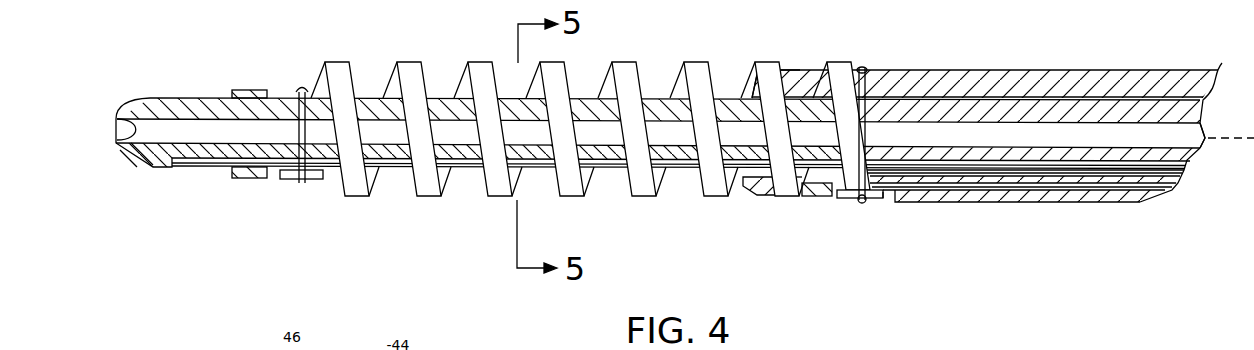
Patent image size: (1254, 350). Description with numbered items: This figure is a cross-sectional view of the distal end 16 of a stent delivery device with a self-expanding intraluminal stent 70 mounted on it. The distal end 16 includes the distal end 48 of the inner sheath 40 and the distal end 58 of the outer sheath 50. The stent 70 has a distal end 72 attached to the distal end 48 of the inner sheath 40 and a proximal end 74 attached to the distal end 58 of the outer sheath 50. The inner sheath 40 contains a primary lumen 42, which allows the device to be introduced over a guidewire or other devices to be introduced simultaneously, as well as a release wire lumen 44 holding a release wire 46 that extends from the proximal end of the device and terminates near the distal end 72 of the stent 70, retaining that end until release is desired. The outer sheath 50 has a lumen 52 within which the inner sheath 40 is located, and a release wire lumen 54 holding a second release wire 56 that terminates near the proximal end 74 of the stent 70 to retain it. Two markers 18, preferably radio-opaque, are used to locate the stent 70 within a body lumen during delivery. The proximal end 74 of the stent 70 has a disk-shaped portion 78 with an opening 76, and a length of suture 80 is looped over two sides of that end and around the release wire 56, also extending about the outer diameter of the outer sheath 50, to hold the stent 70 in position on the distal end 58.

The distal end of the stent delivery device 16 is at (187, 92).
The markers 18 is at (262, 180).
The inner sheath 40 is at (590, 142).
The primary lumen 42 is at (116, 124).
The release wire lumen 44 is at (185, 168).
The release wire 46 is at (237, 158).
The distal end of the inner sheath 48 is at (133, 171).
The outer sheath 50 is at (1162, 68).
The lumen 52 is at (980, 102).
The release wire lumen 54 is at (1042, 196).
The release wire 56 is at (1160, 200).
The distal end of the outer sheath 58 is at (790, 70).
The self-expanding intraluminal stent 70 is at (499, 198).
The distal end of the stent 72 is at (290, 182).
The proximal end of the stent 74 is at (883, 203).
The opening 76 is at (877, 203).
The disk-shaped portion 78 is at (858, 200).
The suture 80 is at (300, 91).